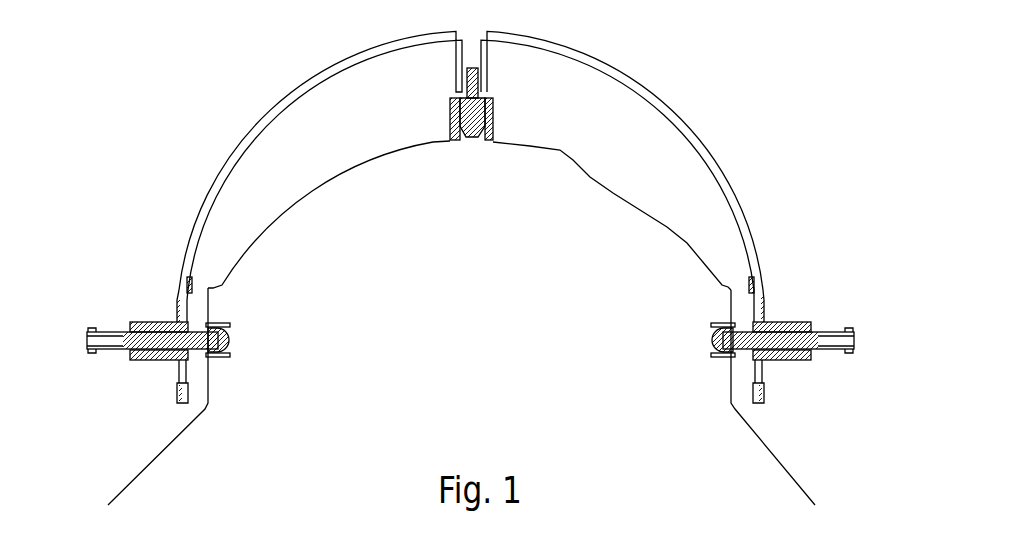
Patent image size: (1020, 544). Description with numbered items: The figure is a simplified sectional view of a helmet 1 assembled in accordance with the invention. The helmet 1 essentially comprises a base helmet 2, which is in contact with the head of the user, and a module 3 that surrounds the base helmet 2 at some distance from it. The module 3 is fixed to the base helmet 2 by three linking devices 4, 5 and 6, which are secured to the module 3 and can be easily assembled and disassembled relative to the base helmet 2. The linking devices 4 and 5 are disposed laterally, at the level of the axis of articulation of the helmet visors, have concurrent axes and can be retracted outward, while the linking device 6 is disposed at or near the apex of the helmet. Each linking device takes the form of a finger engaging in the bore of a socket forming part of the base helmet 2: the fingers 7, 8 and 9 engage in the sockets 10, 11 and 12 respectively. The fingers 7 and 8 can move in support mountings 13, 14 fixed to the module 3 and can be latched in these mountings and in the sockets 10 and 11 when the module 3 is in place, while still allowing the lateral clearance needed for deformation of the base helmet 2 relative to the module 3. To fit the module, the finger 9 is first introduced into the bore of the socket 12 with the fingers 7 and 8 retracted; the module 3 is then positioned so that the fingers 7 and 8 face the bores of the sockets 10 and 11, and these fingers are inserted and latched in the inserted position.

The helmet 1 is at (146, 152).
The base helmet 2 is at (310, 193).
The module 3 is at (257, 128).
The linking device 4 is at (148, 374).
The linking device 5 is at (808, 378).
The linking device 6 is at (505, 127).
The finger 7 is at (230, 340).
The finger 8 is at (710, 340).
The finger 9 is at (467, 142).
The socket 10 is at (222, 322).
The socket 11 is at (717, 320).
The socket 12 is at (450, 122).
The support mounting 13 is at (143, 322).
The support mounting 14 is at (788, 320).